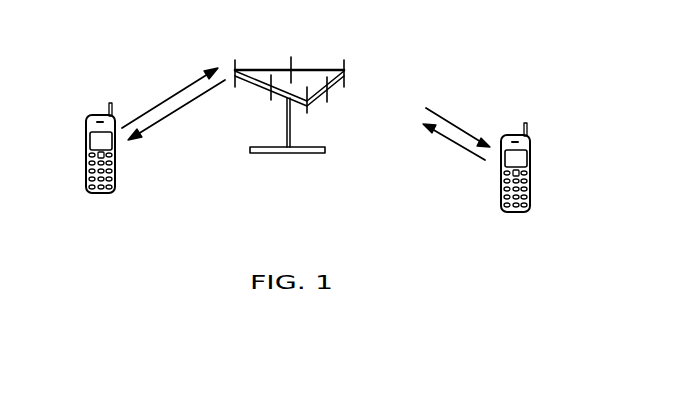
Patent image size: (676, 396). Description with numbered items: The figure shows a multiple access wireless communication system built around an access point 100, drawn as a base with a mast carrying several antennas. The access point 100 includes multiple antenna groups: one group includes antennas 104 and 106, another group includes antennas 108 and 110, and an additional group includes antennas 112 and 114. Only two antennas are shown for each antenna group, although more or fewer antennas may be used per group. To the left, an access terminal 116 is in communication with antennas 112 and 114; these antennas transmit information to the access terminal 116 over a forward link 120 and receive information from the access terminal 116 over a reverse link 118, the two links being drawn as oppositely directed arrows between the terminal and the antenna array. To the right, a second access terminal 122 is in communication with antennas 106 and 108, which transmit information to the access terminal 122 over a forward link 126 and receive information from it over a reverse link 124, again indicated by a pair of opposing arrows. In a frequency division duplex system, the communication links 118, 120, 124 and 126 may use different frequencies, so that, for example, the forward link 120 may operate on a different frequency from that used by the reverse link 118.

The access point 100 is at (298, 154).
The antenna 104 is at (308, 112).
The antenna 106 is at (330, 98).
The antenna 108 is at (346, 80).
The antenna 110 is at (293, 60).
The antenna 112 is at (235, 62).
The antenna 114 is at (271, 97).
The access terminal 116 is at (87, 138).
The reverse link 118 is at (176, 90).
The forward link 120 is at (172, 118).
The access terminal 122 is at (531, 153).
The reverse link 124 is at (462, 148).
The forward link 126 is at (458, 128).